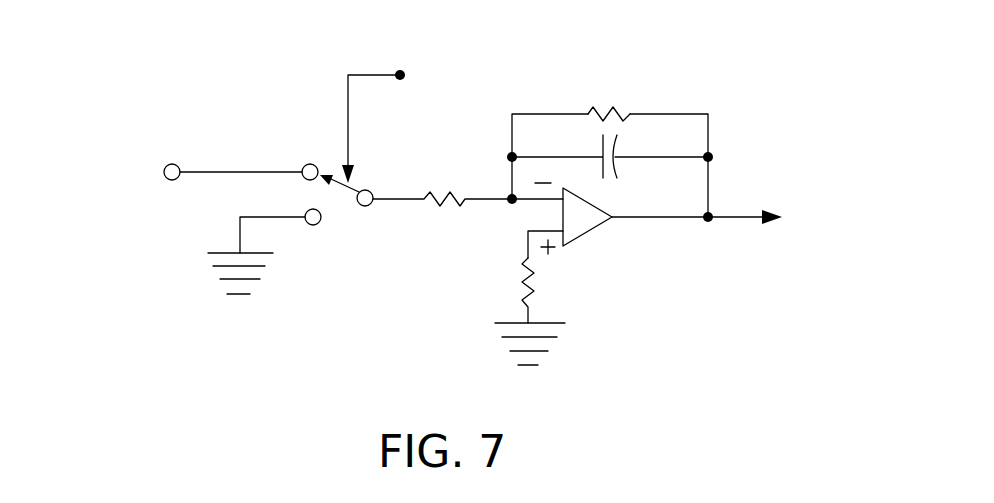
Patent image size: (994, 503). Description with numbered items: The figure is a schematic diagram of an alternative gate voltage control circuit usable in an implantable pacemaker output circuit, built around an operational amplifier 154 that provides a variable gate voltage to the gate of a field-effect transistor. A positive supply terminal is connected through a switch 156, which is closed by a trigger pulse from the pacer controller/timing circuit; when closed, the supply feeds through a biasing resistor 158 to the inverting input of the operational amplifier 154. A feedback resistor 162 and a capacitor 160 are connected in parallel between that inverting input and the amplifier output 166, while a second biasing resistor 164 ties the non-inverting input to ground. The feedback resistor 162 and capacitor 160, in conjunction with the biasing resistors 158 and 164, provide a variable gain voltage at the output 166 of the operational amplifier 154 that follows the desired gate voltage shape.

The operational amplifier 154 is at (597, 225).
The switch 156 is at (342, 207).
The biasing resistor 158 is at (448, 212).
The capacitor 160 is at (621, 165).
The feedback resistor 162 is at (613, 106).
The biasing resistor 164 is at (541, 285).
The output 166 is at (709, 224).